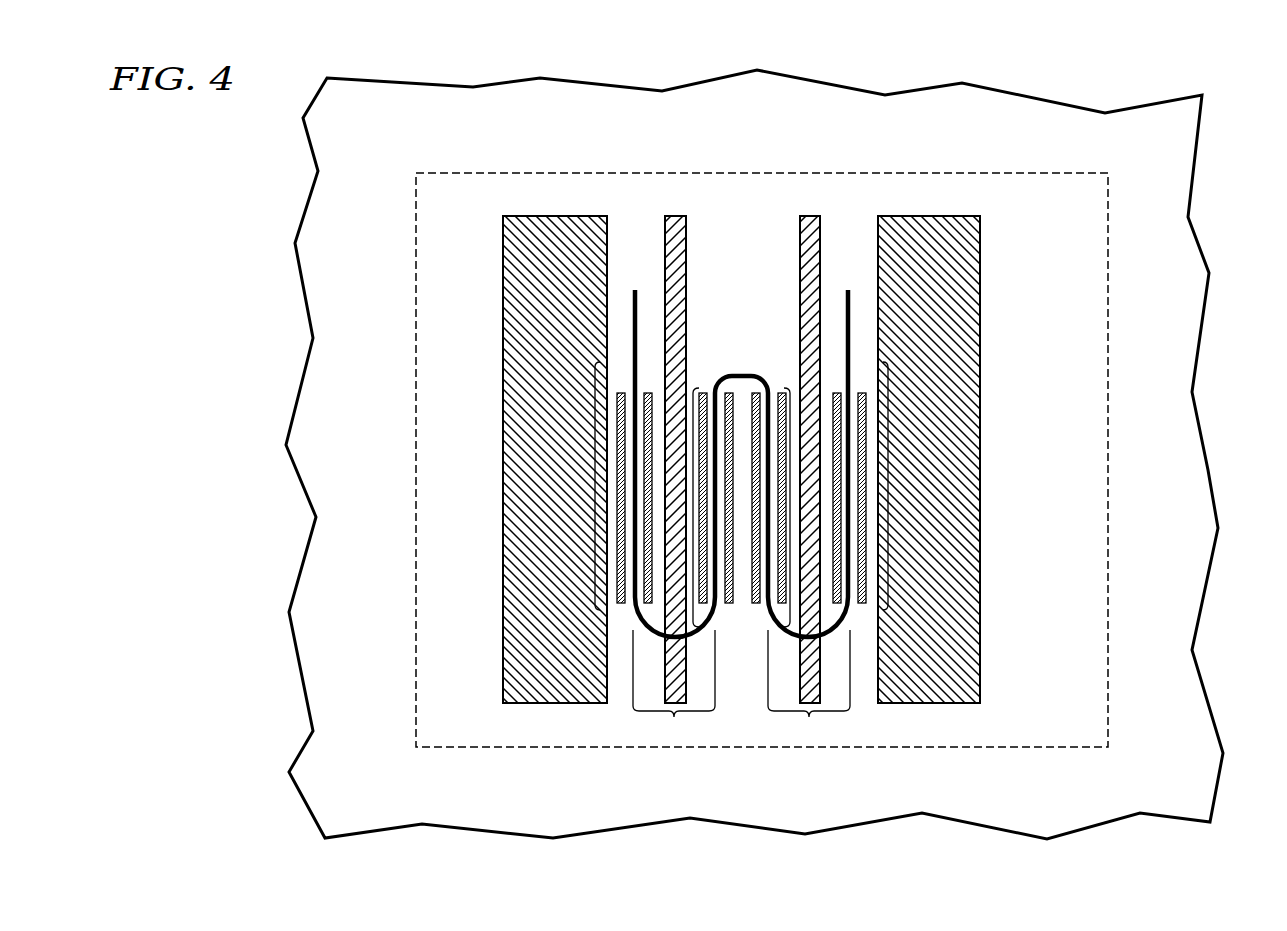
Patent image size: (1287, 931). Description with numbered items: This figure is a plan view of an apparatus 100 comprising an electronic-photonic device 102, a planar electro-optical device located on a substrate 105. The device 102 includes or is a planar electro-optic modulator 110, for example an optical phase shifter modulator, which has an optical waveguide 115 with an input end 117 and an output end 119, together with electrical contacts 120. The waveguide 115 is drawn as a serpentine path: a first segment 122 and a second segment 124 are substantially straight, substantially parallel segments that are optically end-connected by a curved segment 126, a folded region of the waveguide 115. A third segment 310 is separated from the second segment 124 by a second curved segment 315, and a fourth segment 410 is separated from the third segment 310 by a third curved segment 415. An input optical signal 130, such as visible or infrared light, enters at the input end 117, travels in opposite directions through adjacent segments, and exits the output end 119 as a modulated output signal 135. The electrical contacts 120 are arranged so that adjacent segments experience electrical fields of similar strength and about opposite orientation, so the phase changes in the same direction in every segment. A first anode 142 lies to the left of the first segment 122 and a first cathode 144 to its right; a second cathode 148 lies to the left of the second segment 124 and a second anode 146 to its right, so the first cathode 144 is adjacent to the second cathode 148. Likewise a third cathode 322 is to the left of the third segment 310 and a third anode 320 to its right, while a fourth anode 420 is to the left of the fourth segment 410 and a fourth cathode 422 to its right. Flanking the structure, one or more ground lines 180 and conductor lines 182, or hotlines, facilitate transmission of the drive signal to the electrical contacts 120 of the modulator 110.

The apparatus 100 is at (708, 454).
The electronic-photonic device 102 is at (470, 147).
The substrate 105 is at (1178, 158).
The electro-optic modulator 110 is at (1011, 238).
The optical waveguide 115 is at (533, 441).
The input end 117 is at (633, 307).
The output end 119 is at (850, 311).
The electrical contacts 120 is at (579, 590).
The first segment 122 is at (594, 430).
The second segment 124 is at (688, 435).
The curved segment 126 is at (674, 569).
The input optical signal 130 is at (633, 272).
The output signal 135 is at (848, 282).
The first anode 142 is at (617, 477).
The first cathode 144 is at (644, 507).
The second anode 146 is at (700, 540).
The second cathode 148 is at (726, 571).
The ground line 180 is at (552, 228).
The conductor line 182 is at (676, 228).
The third segment 310 is at (795, 435).
The second curved segment 315 is at (711, 373).
The third anode 320 is at (786, 540).
The third cathode 322 is at (760, 571).
The fourth segment 410 is at (889, 430).
The third curved segment 415 is at (809, 569).
The fourth anode 420 is at (840, 509).
The fourth cathode 422 is at (866, 479).